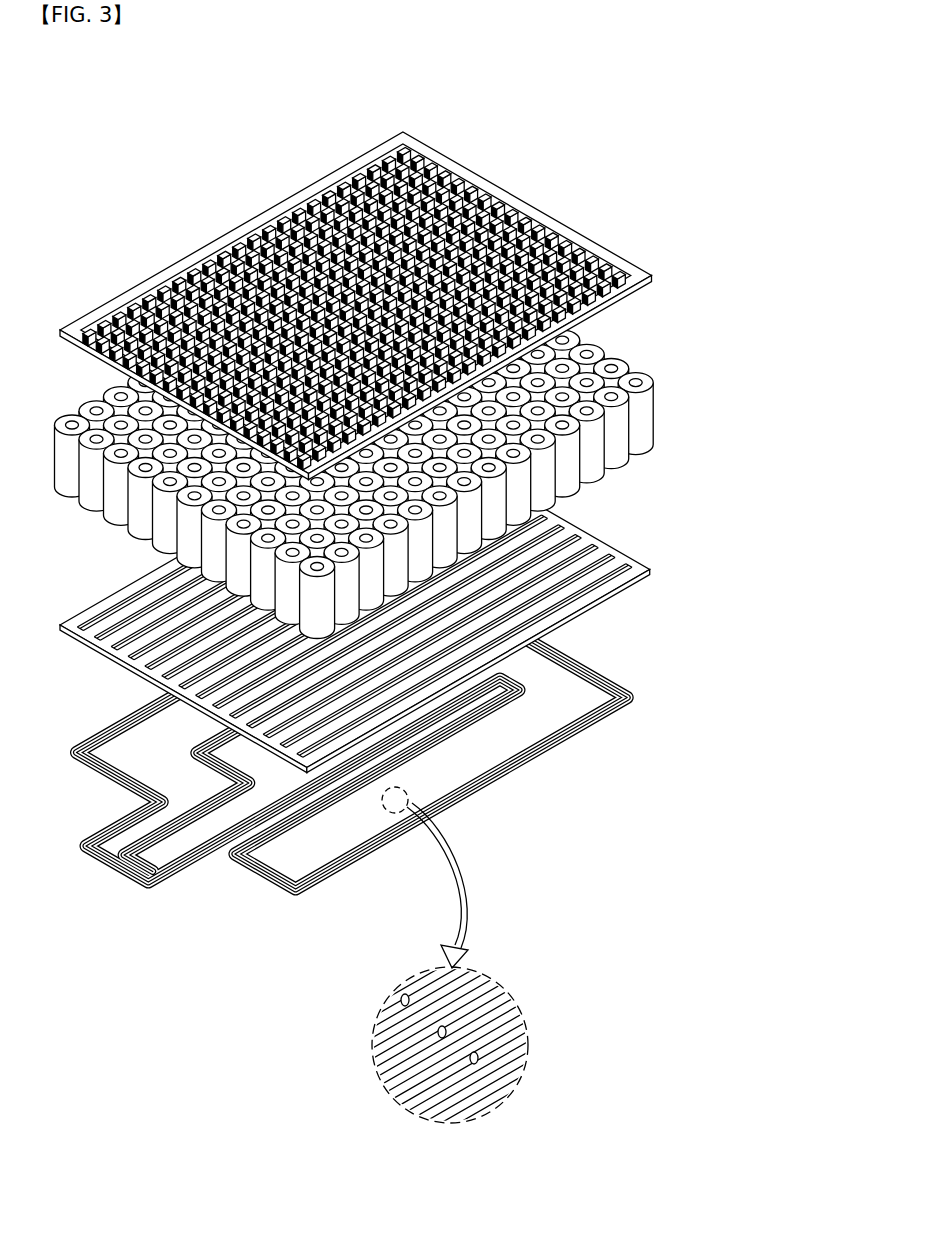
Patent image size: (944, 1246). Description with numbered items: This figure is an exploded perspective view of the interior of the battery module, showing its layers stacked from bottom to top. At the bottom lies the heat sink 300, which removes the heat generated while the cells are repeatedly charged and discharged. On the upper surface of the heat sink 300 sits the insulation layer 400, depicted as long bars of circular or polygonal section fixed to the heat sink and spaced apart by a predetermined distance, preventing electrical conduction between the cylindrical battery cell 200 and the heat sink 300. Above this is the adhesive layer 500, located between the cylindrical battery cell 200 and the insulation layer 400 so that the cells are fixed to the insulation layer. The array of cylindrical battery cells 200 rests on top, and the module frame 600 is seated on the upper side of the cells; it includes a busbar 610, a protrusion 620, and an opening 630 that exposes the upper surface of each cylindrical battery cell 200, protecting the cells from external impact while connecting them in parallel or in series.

The cylindrical battery cell 200 is at (643, 423).
The heat sink 300 is at (604, 696).
The insulation layer 400 is at (518, 1028).
The adhesive layer 500 is at (623, 560).
The module frame 600 is at (356, 274).
The busbar 610 is at (197, 267).
The protrusion 620 is at (270, 223).
The opening 630 is at (322, 193).